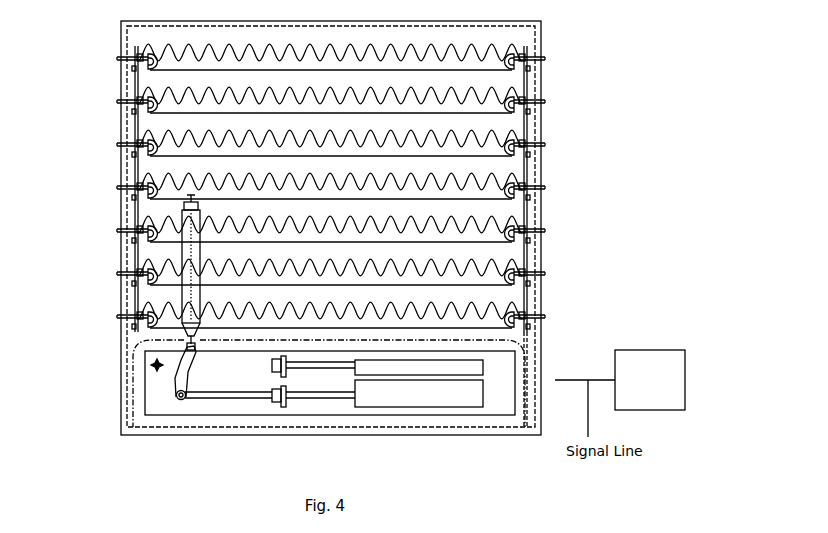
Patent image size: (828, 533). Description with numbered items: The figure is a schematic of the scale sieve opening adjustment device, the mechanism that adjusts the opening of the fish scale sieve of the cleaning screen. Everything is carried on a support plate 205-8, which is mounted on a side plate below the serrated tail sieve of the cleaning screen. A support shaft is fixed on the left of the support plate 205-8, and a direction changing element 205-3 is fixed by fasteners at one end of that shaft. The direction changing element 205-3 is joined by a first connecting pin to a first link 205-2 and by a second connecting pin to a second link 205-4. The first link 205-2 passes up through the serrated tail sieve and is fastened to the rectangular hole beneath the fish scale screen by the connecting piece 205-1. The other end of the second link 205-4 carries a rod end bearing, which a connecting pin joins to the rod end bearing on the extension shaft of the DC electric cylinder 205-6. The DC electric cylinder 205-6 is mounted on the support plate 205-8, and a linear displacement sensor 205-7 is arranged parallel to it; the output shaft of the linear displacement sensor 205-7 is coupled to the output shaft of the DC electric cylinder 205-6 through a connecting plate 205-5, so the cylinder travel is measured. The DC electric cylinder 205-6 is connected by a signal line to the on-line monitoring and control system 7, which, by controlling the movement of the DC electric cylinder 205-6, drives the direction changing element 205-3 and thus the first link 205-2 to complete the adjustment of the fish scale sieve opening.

The connecting piece 205-1 is at (186, 206).
The first link 205-2 is at (188, 291).
The direction changing element 205-3 is at (155, 369).
The second link 205-4 is at (250, 396).
The connecting plate 205-5 is at (284, 404).
The DC electric cylinder 205-6 is at (402, 398).
The linear displacement sensor 205-7 is at (456, 363).
The support plate 205-8 is at (501, 403).
The on-line monitoring and control system 7 is at (620, 393).